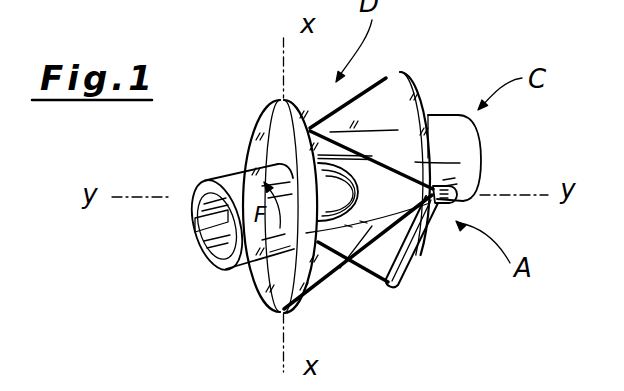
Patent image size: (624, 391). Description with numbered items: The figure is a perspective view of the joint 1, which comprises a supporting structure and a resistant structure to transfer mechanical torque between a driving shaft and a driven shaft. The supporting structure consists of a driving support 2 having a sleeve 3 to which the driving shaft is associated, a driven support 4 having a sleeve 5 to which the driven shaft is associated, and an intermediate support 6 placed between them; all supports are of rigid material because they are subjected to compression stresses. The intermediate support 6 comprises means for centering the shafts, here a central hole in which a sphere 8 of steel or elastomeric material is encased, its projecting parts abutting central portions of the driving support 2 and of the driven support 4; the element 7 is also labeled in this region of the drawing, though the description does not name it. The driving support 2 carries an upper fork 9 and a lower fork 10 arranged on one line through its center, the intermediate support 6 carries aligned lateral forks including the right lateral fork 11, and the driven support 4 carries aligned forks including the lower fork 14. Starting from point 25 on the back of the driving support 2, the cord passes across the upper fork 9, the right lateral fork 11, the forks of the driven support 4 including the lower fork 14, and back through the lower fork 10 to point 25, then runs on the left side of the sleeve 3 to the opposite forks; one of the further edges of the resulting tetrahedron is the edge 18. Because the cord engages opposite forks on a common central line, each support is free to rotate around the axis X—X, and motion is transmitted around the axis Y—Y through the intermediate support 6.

The joint 1 is at (221, 157).
The driving support 2 is at (250, 272).
The sleeve 3 is at (197, 247).
The driven support 4 is at (410, 102).
The sleeve 5 is at (455, 140).
The intermediate support 6 is at (369, 272).
The membrane 7 is at (460, 163).
The sphere 8 is at (336, 169).
The upper fork 9 is at (280, 99).
The lower fork 10 is at (278, 314).
The right lateral fork 11 is at (450, 208).
The lower fork 14 is at (393, 292).
The edge of tetrahedron 18 is at (430, 122).
The point 25 is at (326, 286).